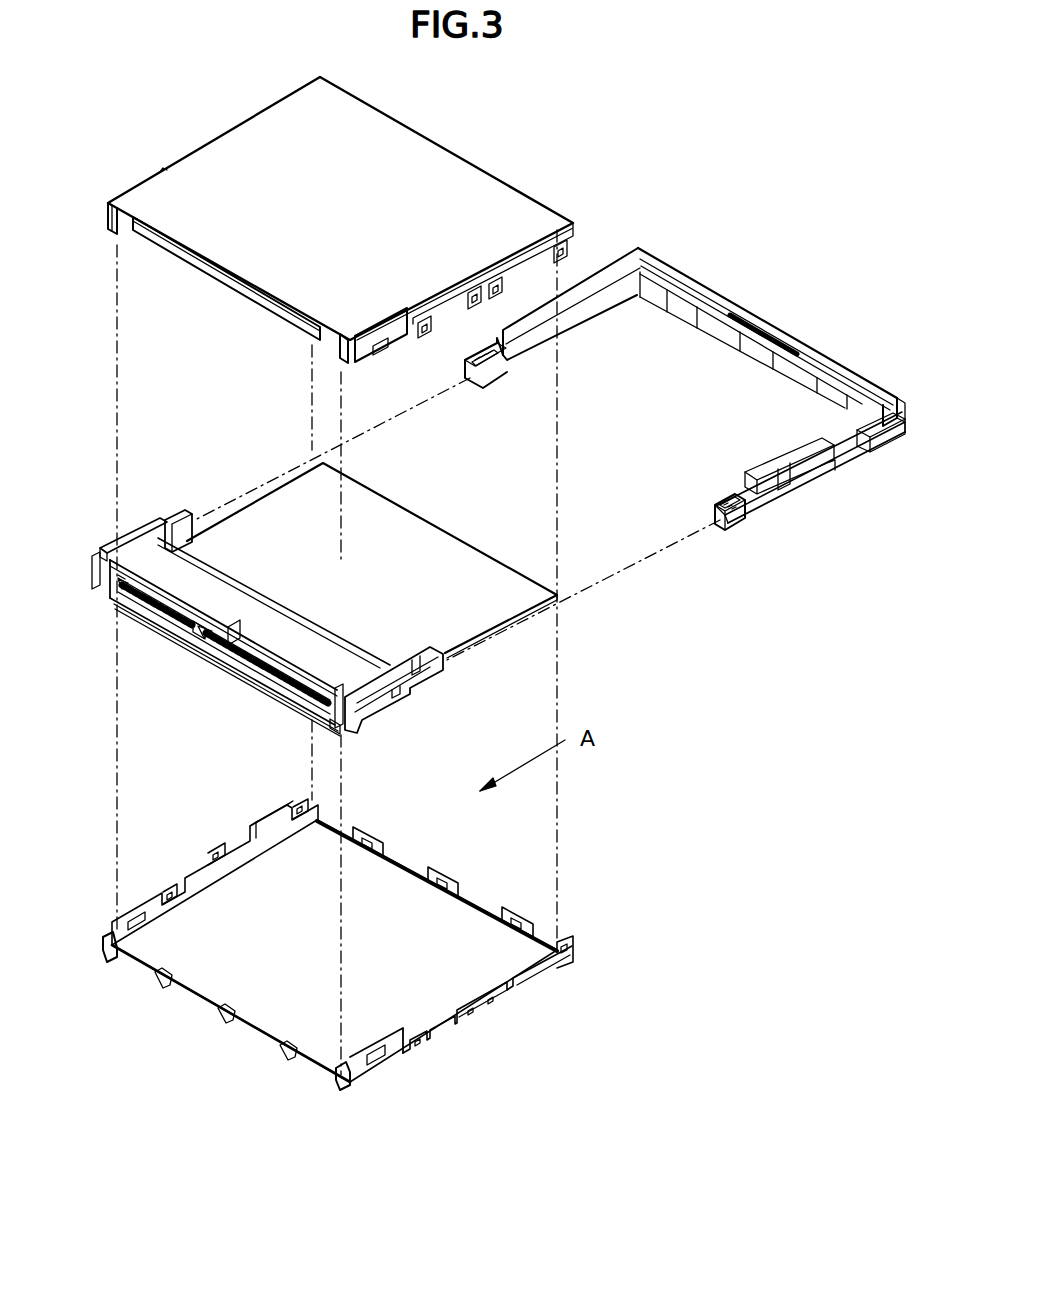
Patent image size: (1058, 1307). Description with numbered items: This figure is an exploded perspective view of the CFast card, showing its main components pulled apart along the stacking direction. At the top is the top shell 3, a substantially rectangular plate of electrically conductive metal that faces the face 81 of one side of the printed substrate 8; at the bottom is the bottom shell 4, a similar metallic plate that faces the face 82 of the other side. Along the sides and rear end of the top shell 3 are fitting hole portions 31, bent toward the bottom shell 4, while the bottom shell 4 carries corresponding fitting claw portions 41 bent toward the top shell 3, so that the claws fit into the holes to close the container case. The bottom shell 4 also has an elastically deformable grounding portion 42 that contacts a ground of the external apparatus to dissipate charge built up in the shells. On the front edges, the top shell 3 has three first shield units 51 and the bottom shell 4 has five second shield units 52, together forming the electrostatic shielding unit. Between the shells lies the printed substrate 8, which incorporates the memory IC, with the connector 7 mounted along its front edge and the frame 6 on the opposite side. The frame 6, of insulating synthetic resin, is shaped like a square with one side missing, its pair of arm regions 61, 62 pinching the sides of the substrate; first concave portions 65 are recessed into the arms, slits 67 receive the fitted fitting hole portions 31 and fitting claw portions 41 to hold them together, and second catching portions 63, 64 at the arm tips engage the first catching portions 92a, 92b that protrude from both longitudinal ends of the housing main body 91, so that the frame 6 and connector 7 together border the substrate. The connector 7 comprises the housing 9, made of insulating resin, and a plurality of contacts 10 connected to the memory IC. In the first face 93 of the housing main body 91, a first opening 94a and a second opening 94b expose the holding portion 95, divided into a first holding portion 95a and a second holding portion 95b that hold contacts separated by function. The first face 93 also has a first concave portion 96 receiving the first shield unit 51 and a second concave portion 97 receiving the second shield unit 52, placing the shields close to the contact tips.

The top shell 3 is at (444, 160).
The bottom shell 4 is at (410, 1007).
The frame 6 is at (735, 300).
The connector 7 is at (241, 607).
The printed substrate 8 is at (500, 627).
The housing 9 is at (220, 593).
The contacts 10 is at (237, 660).
The fitting hole portions 31 is at (420, 337).
The fitting claw portions 41 is at (304, 808).
The grounding portion 42 is at (533, 978).
The first shield unit 51 is at (112, 232).
The second shield unit 52 is at (107, 958).
The arm region 61 is at (823, 470).
The arm region 62 is at (580, 315).
The second catching portion 63 is at (737, 523).
The second catching portion 64 is at (493, 382).
The first concave portions 65 is at (840, 445).
The slits 67 is at (832, 423).
The face 81 is at (415, 523).
The face 82 is at (485, 563).
The housing main body 91 is at (312, 660).
The first catching portion 92a is at (433, 677).
The first catching portion 92b is at (175, 512).
The first face 93 is at (178, 603).
The first opening 94a is at (262, 702).
The second opening 94b is at (112, 612).
The holding portion 95 is at (153, 649).
The first holding portion 95a is at (187, 637).
The second holding portion 95b is at (145, 610).
The first concave portion 96 is at (100, 556).
The second concave portion 97 is at (212, 650).